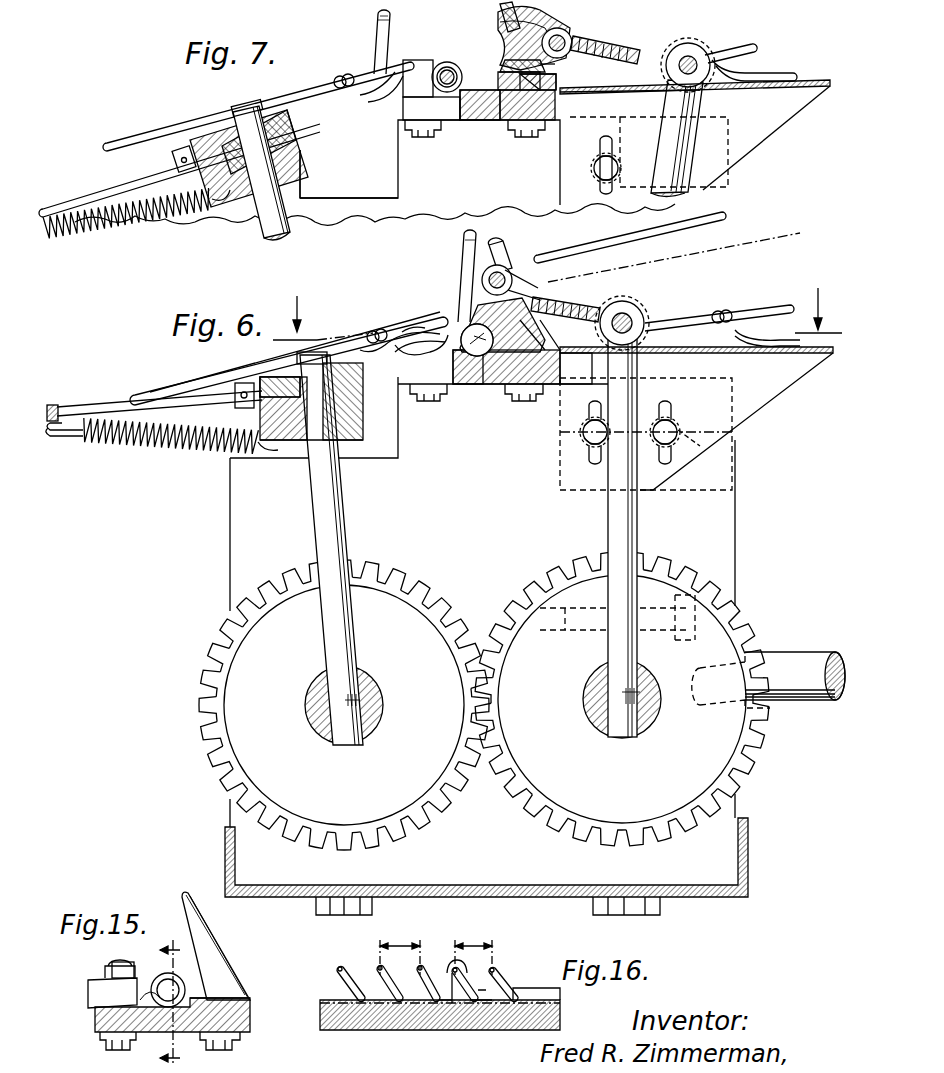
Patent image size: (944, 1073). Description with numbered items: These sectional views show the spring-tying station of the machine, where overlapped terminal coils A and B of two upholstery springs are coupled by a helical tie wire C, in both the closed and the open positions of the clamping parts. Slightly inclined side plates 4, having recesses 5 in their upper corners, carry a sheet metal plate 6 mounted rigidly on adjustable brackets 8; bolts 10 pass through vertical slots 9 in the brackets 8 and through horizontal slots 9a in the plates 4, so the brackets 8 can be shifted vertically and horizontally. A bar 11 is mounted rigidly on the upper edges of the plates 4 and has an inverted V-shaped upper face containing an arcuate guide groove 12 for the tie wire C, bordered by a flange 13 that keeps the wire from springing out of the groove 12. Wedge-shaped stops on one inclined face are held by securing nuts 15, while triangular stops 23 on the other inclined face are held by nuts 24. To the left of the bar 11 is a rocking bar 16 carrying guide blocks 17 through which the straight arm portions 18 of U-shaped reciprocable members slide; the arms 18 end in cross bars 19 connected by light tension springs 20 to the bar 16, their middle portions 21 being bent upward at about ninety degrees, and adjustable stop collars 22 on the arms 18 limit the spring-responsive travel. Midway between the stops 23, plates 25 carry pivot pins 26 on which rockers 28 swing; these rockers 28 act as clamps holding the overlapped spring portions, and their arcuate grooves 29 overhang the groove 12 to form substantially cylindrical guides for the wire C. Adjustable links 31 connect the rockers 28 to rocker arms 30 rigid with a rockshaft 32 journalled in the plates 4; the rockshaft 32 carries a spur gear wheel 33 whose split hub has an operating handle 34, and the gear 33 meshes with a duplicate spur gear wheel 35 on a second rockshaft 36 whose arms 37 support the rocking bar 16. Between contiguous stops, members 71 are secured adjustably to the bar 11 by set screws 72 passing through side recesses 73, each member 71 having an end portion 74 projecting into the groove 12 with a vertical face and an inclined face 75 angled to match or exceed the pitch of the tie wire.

In FIG. 6, the side plates 4 is at (728, 522).
In FIG. 6, the recesses 5 is at (400, 428).
In FIG. 7, the sheet metal plate 6 is at (778, 88).
In FIG. 6, the sheet metal plate 6 is at (804, 356).
In FIG. 7, the adjustable brackets 8 is at (756, 136).
In FIG. 6, the adjustable brackets 8 is at (762, 394).
In FIG. 7, the vertical slots 9 is at (612, 152).
In FIG. 6, the vertical slots 9 is at (594, 462).
In FIG. 6, the horizontal slots 9a is at (708, 450).
In FIG. 7, the bolts 10 is at (615, 168).
In FIG. 6, the bolts 10 is at (580, 436).
In FIG. 7, the bar 11 is at (481, 120).
In FIG. 6, the bar 11 is at (478, 396).
In FIG. 15, the bar 11 is at (245, 1024).
In FIG. 16, the bar 11 is at (370, 1030).
In FIG. 7, the guide groove 12 is at (464, 120).
In FIG. 6, the guide groove 12 is at (462, 388).
In FIG. 7, the flange 13 is at (500, 124).
In FIG. 15, the flange 13 is at (215, 990).
In FIG. 16, the flange 13 is at (516, 990).
In FIG. 7, the securing nuts 15 is at (424, 137).
In FIG. 6, the securing nuts 15 is at (428, 401).
In FIG. 15, the securing nuts 15 is at (104, 1042).
In FIG. 7, the rocking bar 16 is at (302, 176).
In FIG. 6, the rocking bar 16 is at (340, 442).
In FIG. 15, the rocking bar 16 is at (179, 996).
In FIG. 7, the guide blocks 17 is at (212, 130).
In FIG. 6, the guide blocks 17 is at (278, 376).
In FIG. 7, the arm portions 18 is at (118, 182).
In FIG. 6, the arm portions 18 is at (122, 392).
In FIG. 7, the cross bars 19 is at (447, 62).
In FIG. 6, the cross bars 19 is at (52, 404).
In FIG. 15, the cross bars 19 is at (128, 962).
In FIG. 7, the tension springs 20 is at (86, 236).
In FIG. 6, the tension springs 20 is at (126, 444).
In FIG. 7, the middle portions 21 is at (376, 38).
In FIG. 6, the middle portions 21 is at (462, 268).
In FIG. 7, the stop collars 22 is at (176, 156).
In FIG. 6, the stop collars 22 is at (244, 410).
In FIG. 7, the stops 23 is at (502, 10).
In FIG. 6, the stops 23 is at (500, 252).
In FIG. 15, the stops 23 is at (212, 926).
In FIG. 7, the nuts 24 is at (526, 137).
In FIG. 6, the nuts 24 is at (516, 401).
In FIG. 15, the nuts 24 is at (242, 1044).
In FIG. 7, the plates 25 is at (558, 81).
In FIG. 6, the plates 25 is at (576, 368).
In FIG. 7, the pivot pins 26 is at (508, 62).
In FIG. 6, the pivot pins 26 is at (592, 270).
In FIG. 7, the rockers 28 is at (535, 30).
In FIG. 6, the rockers 28 is at (482, 308).
In FIG. 7, the grooves 29 is at (510, 40).
In FIG. 7, the rocker arms 30 is at (690, 146).
In FIG. 6, the rocker arms 30 is at (640, 372).
In FIG. 7, the adjustable links 31 is at (640, 36).
In FIG. 6, the adjustable links 31 is at (548, 298).
In FIG. 6, the rockshaft 32 is at (600, 684).
In FIG. 6, the spur gear wheel 33 is at (692, 754).
In FIG. 6, the operating handle 34 is at (814, 660).
In FIG. 6, the duplicate spur gear wheel 35 is at (400, 622).
In FIG. 6, the rockshaft 36 is at (306, 697).
In FIG. 7, the arms 37 is at (270, 236).
In FIG. 6, the arms 37 is at (338, 525).
In FIG. 15, the members 71 is at (90, 990).
In FIG. 16, the members 71 is at (478, 972).
In FIG. 15, the set screws 72 is at (108, 972).
In FIG. 16, the set screws 72 is at (452, 962).
In FIG. 16, the recesses 73 is at (460, 1006).
In FIG. 16, the end portion 74 is at (436, 1004).
In FIG. 16, the inclined face 75 is at (430, 986).
In FIG. 7, the terminal coil A is at (774, 76).
In FIG. 6, the terminal coil A is at (798, 306).
In FIG. 7, the terminal coil B is at (406, 56).
In FIG. 6, the terminal coil B is at (395, 330).
In FIG. 7, the helical tie wire C is at (426, 100).
In FIG. 6, the helical tie wire C is at (462, 330).
In FIG. 15, the helical tie wire C is at (192, 988).
In FIG. 16, the helical tie wire C is at (334, 964).